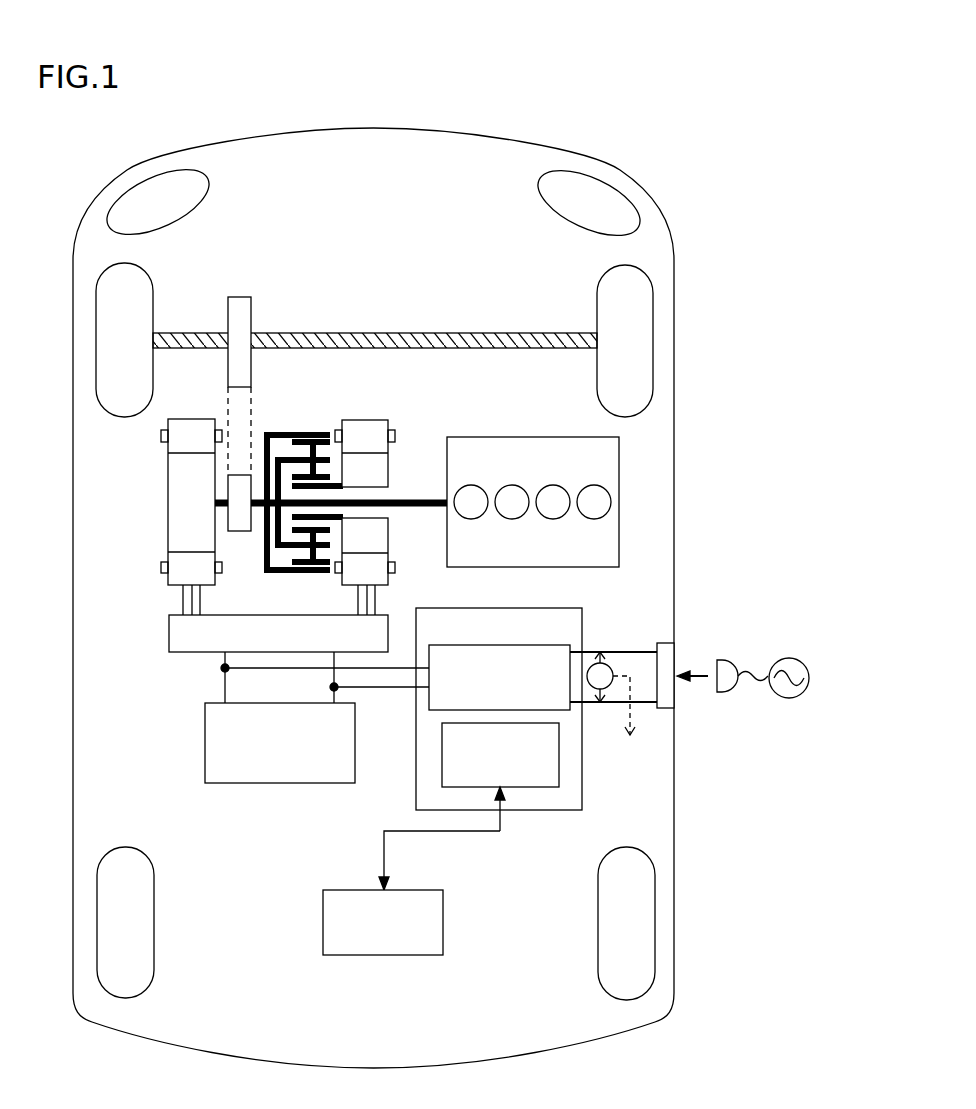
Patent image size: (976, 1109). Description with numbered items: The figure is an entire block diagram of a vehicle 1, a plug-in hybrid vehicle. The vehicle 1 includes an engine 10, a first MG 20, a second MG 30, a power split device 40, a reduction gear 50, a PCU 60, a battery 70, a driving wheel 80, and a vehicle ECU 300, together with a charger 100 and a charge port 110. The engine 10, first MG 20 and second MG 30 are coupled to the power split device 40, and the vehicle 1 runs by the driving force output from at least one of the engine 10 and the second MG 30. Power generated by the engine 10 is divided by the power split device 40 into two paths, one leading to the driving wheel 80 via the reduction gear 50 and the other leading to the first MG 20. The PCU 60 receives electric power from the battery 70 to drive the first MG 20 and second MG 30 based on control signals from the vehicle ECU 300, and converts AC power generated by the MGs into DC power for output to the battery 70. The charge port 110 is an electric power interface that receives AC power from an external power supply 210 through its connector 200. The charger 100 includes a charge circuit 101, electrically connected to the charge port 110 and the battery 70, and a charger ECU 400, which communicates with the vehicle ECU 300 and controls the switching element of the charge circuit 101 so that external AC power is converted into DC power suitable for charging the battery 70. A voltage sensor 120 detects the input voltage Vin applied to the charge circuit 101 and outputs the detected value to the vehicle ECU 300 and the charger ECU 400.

The vehicle 1 is at (365, 106).
The engine 10 is at (472, 437).
The first MG 20 is at (366, 420).
The second MG 30 is at (191, 419).
The power split device 40 is at (305, 435).
The reduction gear 50 is at (238, 297).
The PCU 60 is at (169, 632).
The battery 70 is at (205, 743).
The driving wheel 80 is at (603, 276).
The charger 100 is at (475, 733).
The charge circuit 101 is at (518, 645).
The charge port 110 is at (665, 643).
The voltage sensor 120 is at (610, 663).
The connector 200 is at (722, 660).
The external power supply 210 is at (789, 658).
The vehicle ECU 300 is at (385, 957).
The charger ECU 400 is at (442, 752).